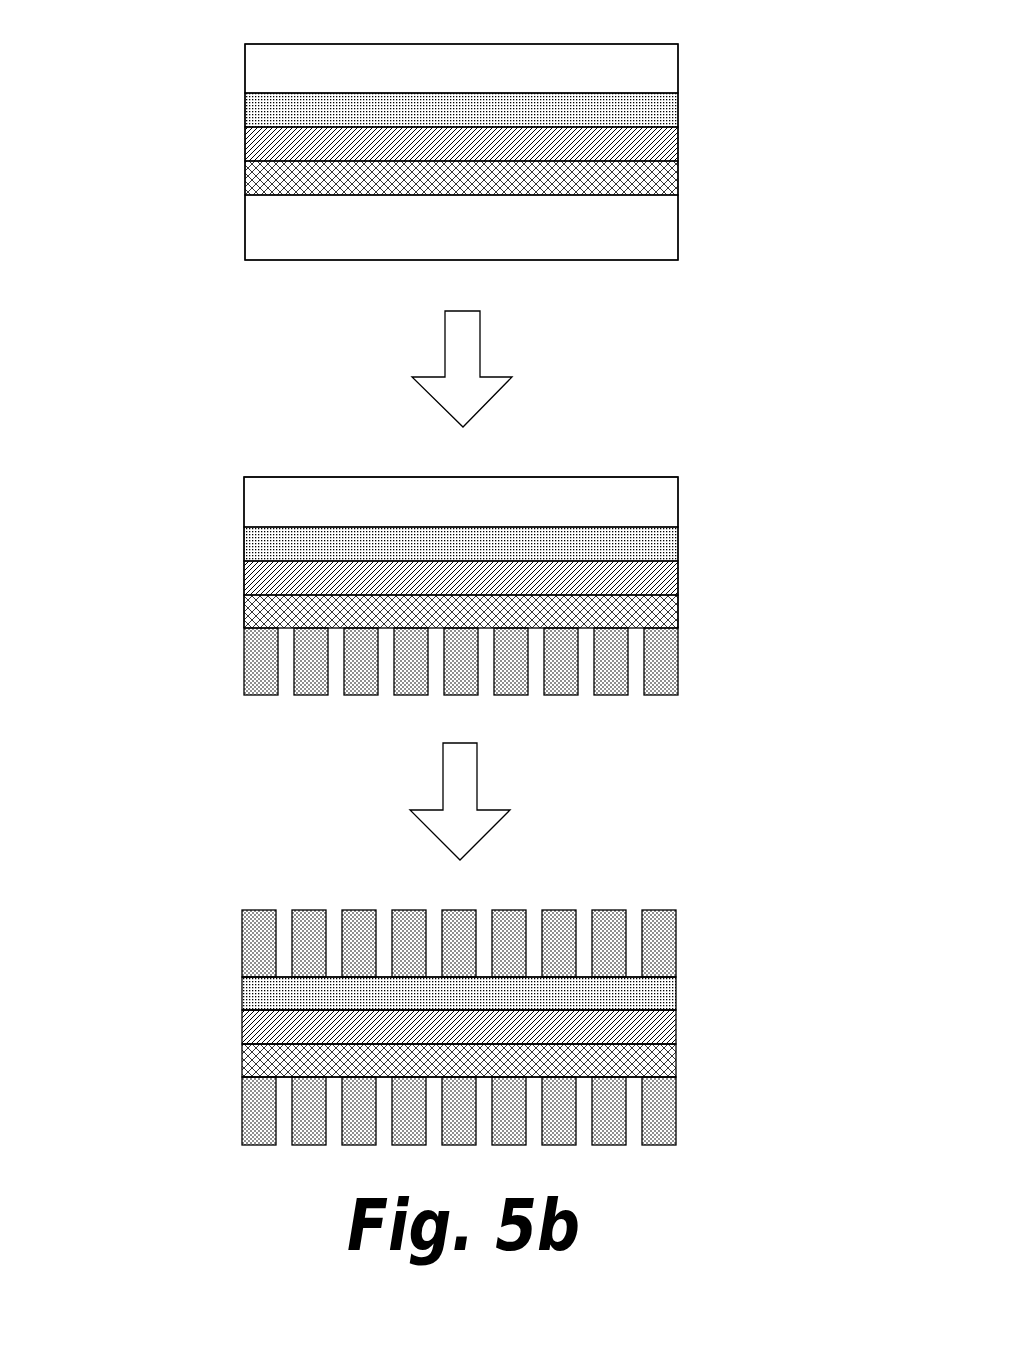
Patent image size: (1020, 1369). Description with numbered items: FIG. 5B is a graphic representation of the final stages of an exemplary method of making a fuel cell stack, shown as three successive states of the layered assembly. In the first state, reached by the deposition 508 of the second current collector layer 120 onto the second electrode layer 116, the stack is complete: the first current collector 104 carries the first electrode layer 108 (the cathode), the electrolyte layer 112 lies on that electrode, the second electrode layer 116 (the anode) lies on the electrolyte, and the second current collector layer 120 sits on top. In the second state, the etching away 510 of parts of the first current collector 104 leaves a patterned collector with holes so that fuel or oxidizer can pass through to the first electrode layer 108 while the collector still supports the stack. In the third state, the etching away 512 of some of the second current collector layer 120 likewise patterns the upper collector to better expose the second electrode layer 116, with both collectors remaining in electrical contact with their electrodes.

The depositing of the second current collector layer 508 is at (170, 164).
The etching away of the first current collector 510 is at (170, 596).
The etching away of the second current collector layer 512 is at (168, 1044).
The second current collector layer 120 is at (602, 80).
The second electrode layer 116 is at (592, 121).
The electrolyte layer 112 is at (558, 155).
The first electrode layer 108 is at (607, 189).
The first current collector 104 is at (602, 238).